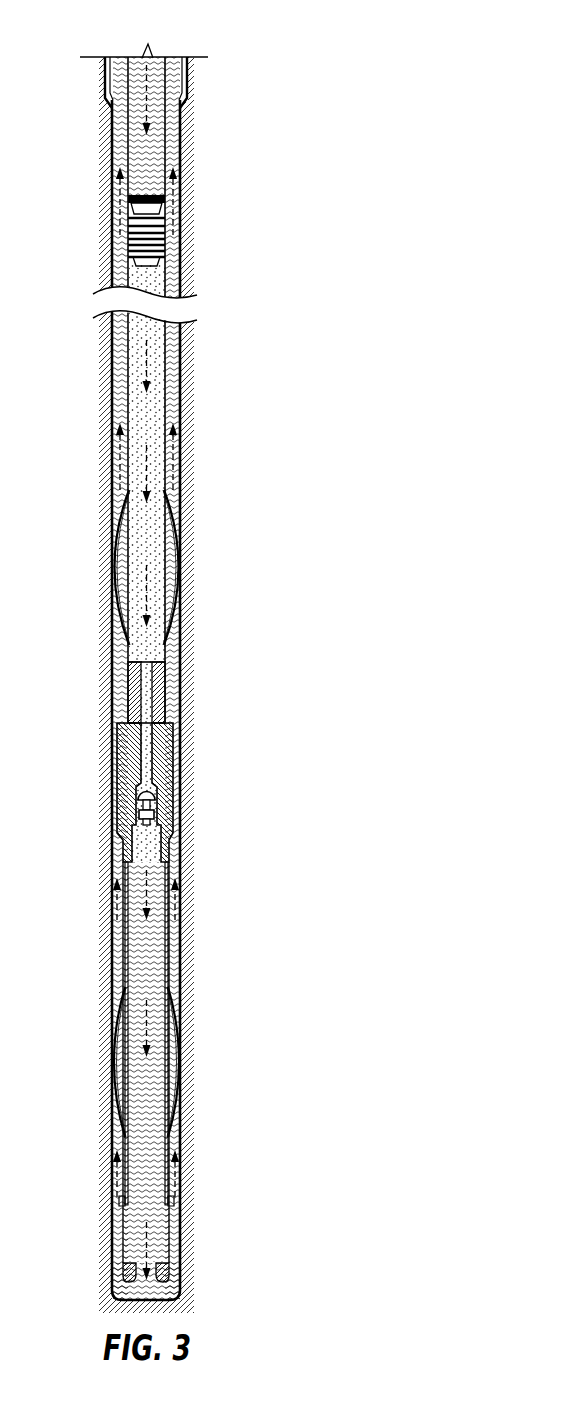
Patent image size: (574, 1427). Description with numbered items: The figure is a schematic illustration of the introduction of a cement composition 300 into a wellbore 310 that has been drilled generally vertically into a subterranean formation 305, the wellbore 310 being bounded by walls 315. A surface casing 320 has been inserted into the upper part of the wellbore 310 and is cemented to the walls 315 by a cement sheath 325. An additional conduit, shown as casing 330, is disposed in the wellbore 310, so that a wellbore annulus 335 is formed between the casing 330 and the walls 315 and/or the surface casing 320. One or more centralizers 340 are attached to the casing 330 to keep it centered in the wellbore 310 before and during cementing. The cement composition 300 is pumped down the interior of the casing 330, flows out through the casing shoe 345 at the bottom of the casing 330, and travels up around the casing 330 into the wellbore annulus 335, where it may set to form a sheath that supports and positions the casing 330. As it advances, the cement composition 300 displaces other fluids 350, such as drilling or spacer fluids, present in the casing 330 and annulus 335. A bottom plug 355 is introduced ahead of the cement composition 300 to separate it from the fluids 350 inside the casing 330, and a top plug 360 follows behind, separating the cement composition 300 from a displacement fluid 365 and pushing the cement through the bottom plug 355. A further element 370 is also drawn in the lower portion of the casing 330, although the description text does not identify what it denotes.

The cement composition 300 is at (146, 355).
The subterranean formation 305 is at (196, 620).
The wellbore 310 is at (186, 492).
The walls 315 is at (180, 240).
The surface casing 320 is at (175, 62).
The cement sheath 325 is at (188, 73).
The casing 330 is at (166, 400).
The wellbore annulus 335 is at (121, 490).
The centralizers 340 is at (119, 1022).
The casing shoe 345 is at (120, 1225).
The fluids 350 is at (146, 900).
The bottom plug 355 is at (128, 680).
The top plug 360 is at (122, 250).
The displacement fluid 365 is at (146, 96).
The valve assembly 370 is at (117, 760).